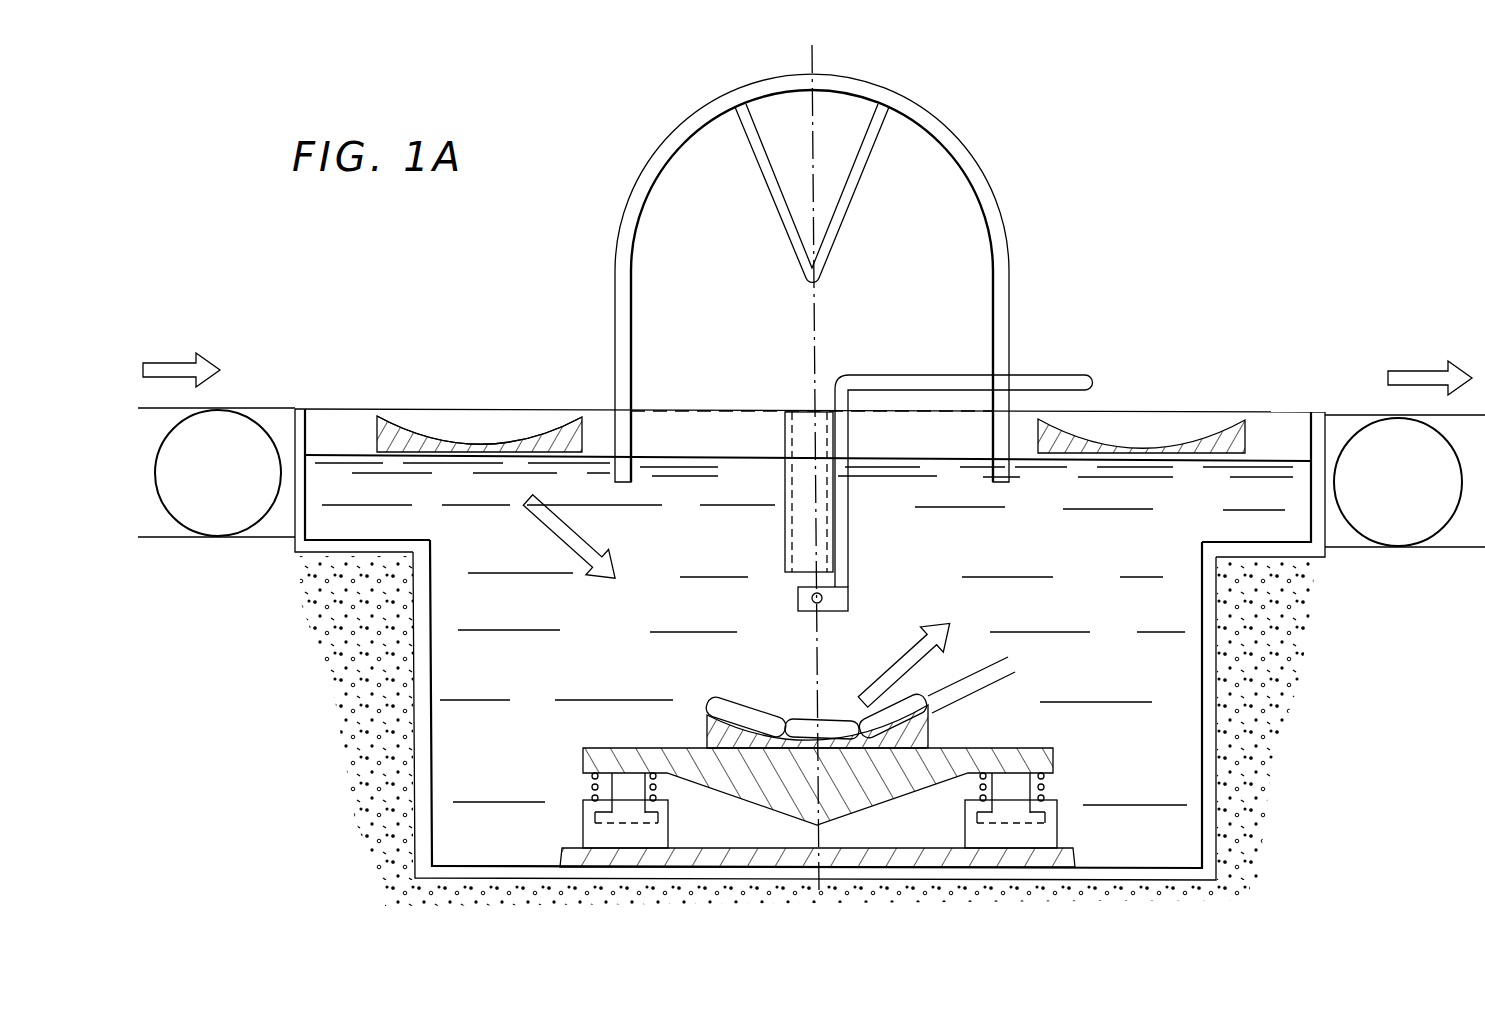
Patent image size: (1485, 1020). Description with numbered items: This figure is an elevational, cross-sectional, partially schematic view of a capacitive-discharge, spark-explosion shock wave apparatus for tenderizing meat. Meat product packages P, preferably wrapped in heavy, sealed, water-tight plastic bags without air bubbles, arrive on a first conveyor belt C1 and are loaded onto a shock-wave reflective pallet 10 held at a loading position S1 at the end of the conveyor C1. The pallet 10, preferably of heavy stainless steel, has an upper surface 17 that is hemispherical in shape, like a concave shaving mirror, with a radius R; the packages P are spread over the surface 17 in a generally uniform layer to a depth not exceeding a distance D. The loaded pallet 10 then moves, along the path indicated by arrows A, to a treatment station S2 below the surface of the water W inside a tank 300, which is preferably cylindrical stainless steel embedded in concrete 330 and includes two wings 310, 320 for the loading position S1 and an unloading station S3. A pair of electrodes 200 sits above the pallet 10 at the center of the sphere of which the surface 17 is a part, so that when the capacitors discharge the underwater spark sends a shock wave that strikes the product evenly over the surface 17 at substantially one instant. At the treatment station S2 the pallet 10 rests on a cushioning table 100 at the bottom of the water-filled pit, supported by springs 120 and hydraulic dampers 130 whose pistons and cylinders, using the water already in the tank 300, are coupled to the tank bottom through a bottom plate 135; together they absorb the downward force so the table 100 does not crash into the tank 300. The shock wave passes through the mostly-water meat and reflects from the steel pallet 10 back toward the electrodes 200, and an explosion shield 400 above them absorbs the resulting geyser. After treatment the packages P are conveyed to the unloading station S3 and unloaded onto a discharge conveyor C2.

The explosion shield 400 is at (1007, 218).
The tank 300 is at (1221, 755).
The wing 310 is at (313, 549).
The wing 320 is at (1298, 556).
The concrete 330 is at (364, 777).
The electrodes 200 is at (810, 597).
The radius R is at (808, 614).
The water W is at (1268, 460).
The first conveyor belt C1 is at (242, 413).
The discharge conveyor C2 is at (1358, 424).
The arrows A is at (176, 365).
The upper surface 17 is at (408, 432).
The shock-wave reflective pallet 10 is at (461, 447).
The loading position S1 is at (508, 430).
The treatment station S2 is at (838, 697).
The unloading station S3 is at (1118, 428).
The meat product packages P is at (711, 709).
The distance D is at (1000, 710).
The cushioning table 100 is at (590, 748).
The springs 120 is at (589, 784).
The hydraulic dampers 130 is at (585, 823).
The bottom plate 135 is at (870, 849).